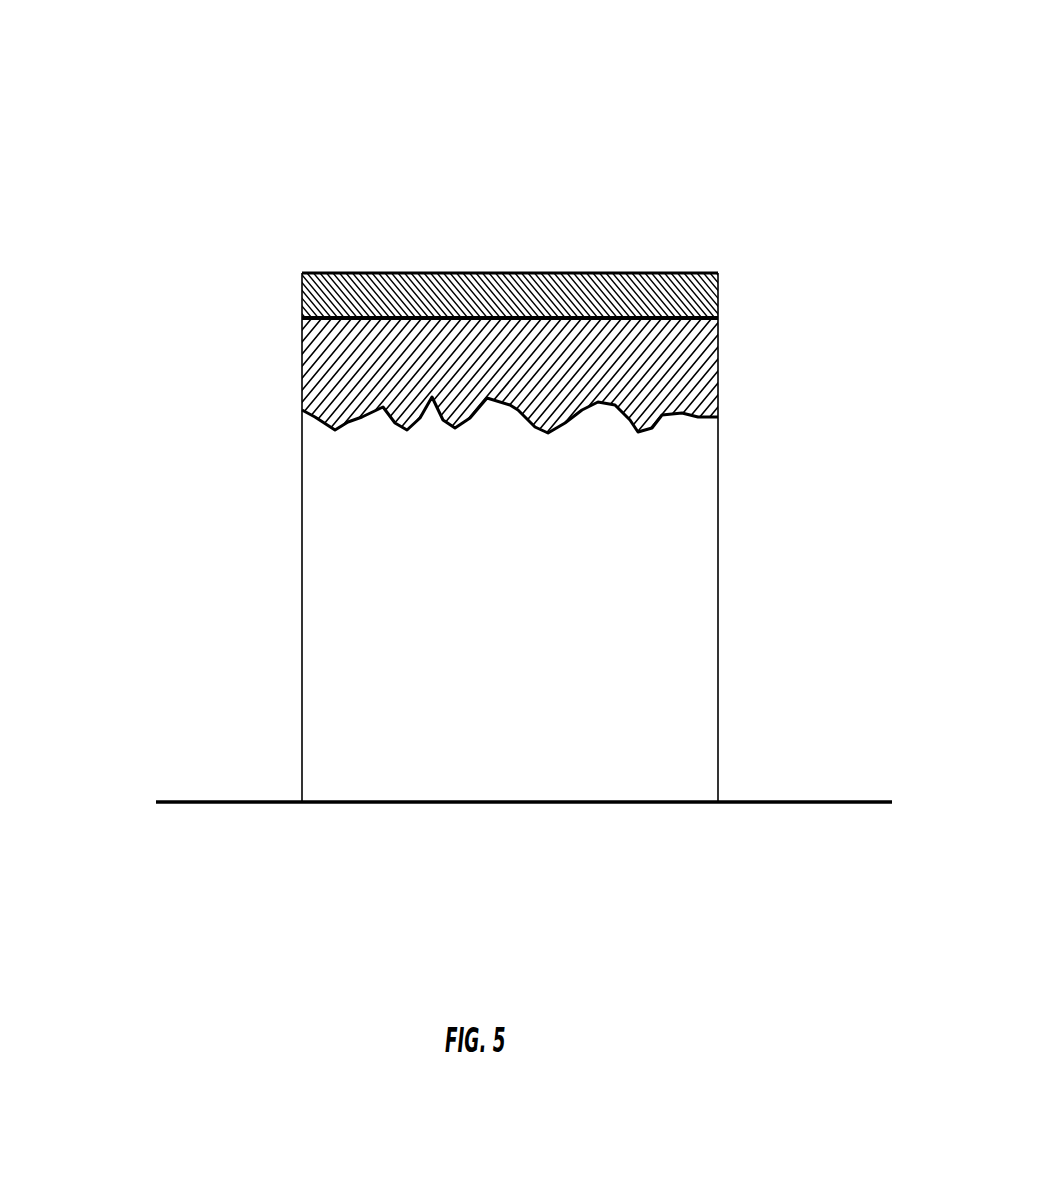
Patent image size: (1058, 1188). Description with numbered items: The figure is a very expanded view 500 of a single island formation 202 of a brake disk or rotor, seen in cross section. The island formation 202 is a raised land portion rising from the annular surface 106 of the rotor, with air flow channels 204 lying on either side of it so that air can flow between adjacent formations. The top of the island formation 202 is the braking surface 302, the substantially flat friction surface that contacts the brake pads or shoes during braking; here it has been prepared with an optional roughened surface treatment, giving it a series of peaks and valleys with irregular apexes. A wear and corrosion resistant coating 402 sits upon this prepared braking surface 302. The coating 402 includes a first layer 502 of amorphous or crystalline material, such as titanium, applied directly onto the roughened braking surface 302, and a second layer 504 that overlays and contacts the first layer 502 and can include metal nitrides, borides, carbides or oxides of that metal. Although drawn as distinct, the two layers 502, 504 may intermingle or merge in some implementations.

The expanded view 500 is at (140, 105).
The annular surface 106 is at (233, 800).
The island formation 202 is at (683, 557).
The air flow channel 204 is at (210, 655).
The wear and corrosion resistant coating 402 is at (293, 272).
The second layer 504 is at (574, 300).
The first layer 502 is at (638, 387).
The braking surface 302 is at (431, 400).